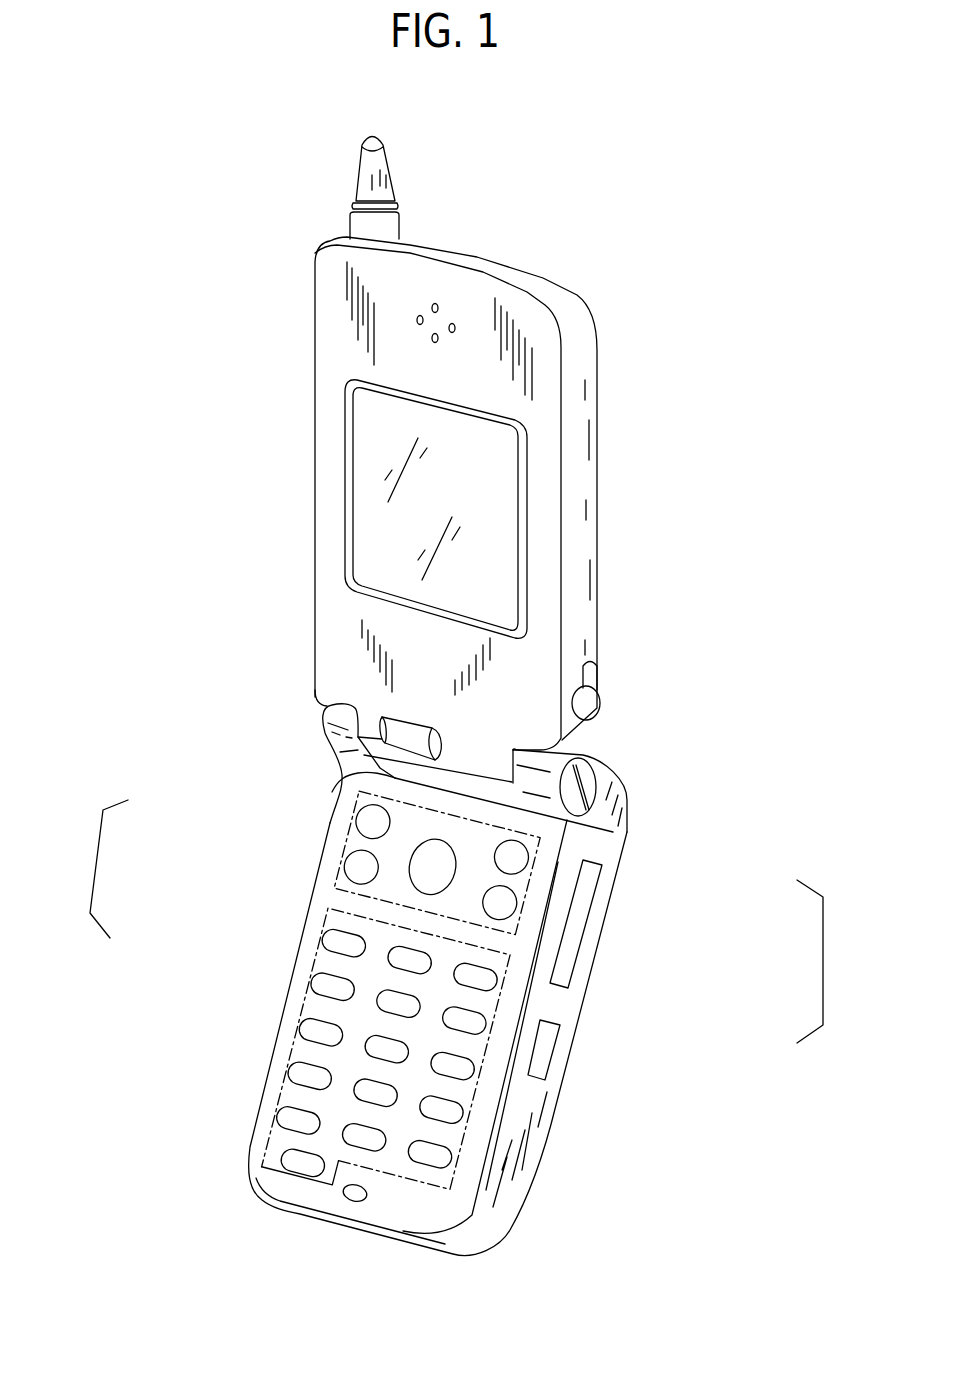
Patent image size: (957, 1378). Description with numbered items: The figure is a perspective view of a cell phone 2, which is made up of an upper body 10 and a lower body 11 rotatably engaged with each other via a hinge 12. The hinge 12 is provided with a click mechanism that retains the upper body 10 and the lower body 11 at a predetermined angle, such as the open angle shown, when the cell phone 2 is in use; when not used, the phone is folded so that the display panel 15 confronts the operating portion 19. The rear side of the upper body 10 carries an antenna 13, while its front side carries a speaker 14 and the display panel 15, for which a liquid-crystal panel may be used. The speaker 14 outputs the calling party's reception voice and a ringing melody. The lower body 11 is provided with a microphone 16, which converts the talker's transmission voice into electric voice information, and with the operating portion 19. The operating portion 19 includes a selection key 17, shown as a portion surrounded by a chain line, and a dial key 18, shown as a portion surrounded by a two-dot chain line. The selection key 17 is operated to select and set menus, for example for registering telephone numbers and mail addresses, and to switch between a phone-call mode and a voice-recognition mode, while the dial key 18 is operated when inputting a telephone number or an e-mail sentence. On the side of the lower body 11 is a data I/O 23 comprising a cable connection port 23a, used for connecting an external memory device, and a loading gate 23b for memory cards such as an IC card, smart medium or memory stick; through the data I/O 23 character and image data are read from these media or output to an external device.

The cell phone 2 is at (178, 200).
The upper body 10 is at (306, 358).
The lower body 11 is at (255, 1074).
The hinge 12 is at (372, 730).
The antenna 13 is at (345, 180).
The speaker 14 is at (427, 322).
The display panel 15 is at (497, 557).
The microphone 16 is at (350, 1200).
The selection key 17 is at (330, 837).
The dial key 18 is at (330, 1017).
The operating portion 19 is at (85, 869).
The data I/O 23 is at (829, 961).
The cable connection port 23a is at (547, 1043).
The loading gate 23b is at (587, 898).